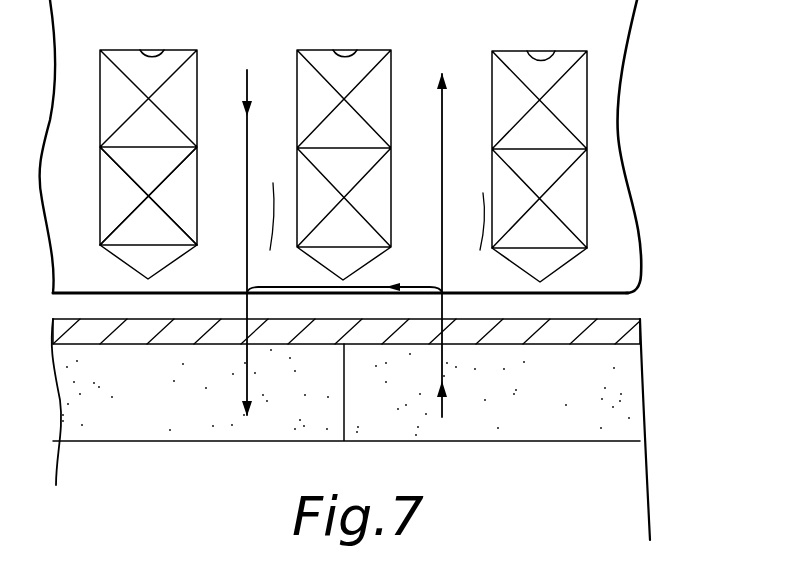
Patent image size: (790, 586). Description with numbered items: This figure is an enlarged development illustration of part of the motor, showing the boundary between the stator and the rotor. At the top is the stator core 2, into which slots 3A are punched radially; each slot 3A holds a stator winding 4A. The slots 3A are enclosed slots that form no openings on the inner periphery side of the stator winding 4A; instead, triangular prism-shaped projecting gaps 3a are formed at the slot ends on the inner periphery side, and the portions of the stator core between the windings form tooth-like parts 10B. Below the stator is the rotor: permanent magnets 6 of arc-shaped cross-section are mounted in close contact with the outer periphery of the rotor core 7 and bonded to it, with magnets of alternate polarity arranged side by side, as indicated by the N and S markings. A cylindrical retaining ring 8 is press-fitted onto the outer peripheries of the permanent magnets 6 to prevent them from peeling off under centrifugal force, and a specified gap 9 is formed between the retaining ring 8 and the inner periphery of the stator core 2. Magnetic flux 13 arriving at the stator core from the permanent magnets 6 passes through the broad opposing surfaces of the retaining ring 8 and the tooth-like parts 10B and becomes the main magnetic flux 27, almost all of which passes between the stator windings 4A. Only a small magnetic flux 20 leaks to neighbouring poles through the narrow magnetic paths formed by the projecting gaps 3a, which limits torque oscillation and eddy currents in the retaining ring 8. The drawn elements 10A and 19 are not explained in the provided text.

The stator core 2 is at (612, 112).
The slots 3A is at (150, 55).
The projecting gaps 3a is at (158, 253).
The stator winding 4A is at (108, 98).
The permanent magnets 6 is at (618, 412).
The rotor core 7 is at (625, 497).
The retaining ring 8 is at (628, 340).
The gap 9 is at (632, 313).
The coil winding 10A is at (218, 202).
The tooth-like parts 10B is at (376, 233).
The magnetic flux 13 is at (442, 392).
The base plate 19 is at (146, 287).
The magnetic flux 20 is at (325, 285).
The main magnetic flux 27 is at (247, 93).